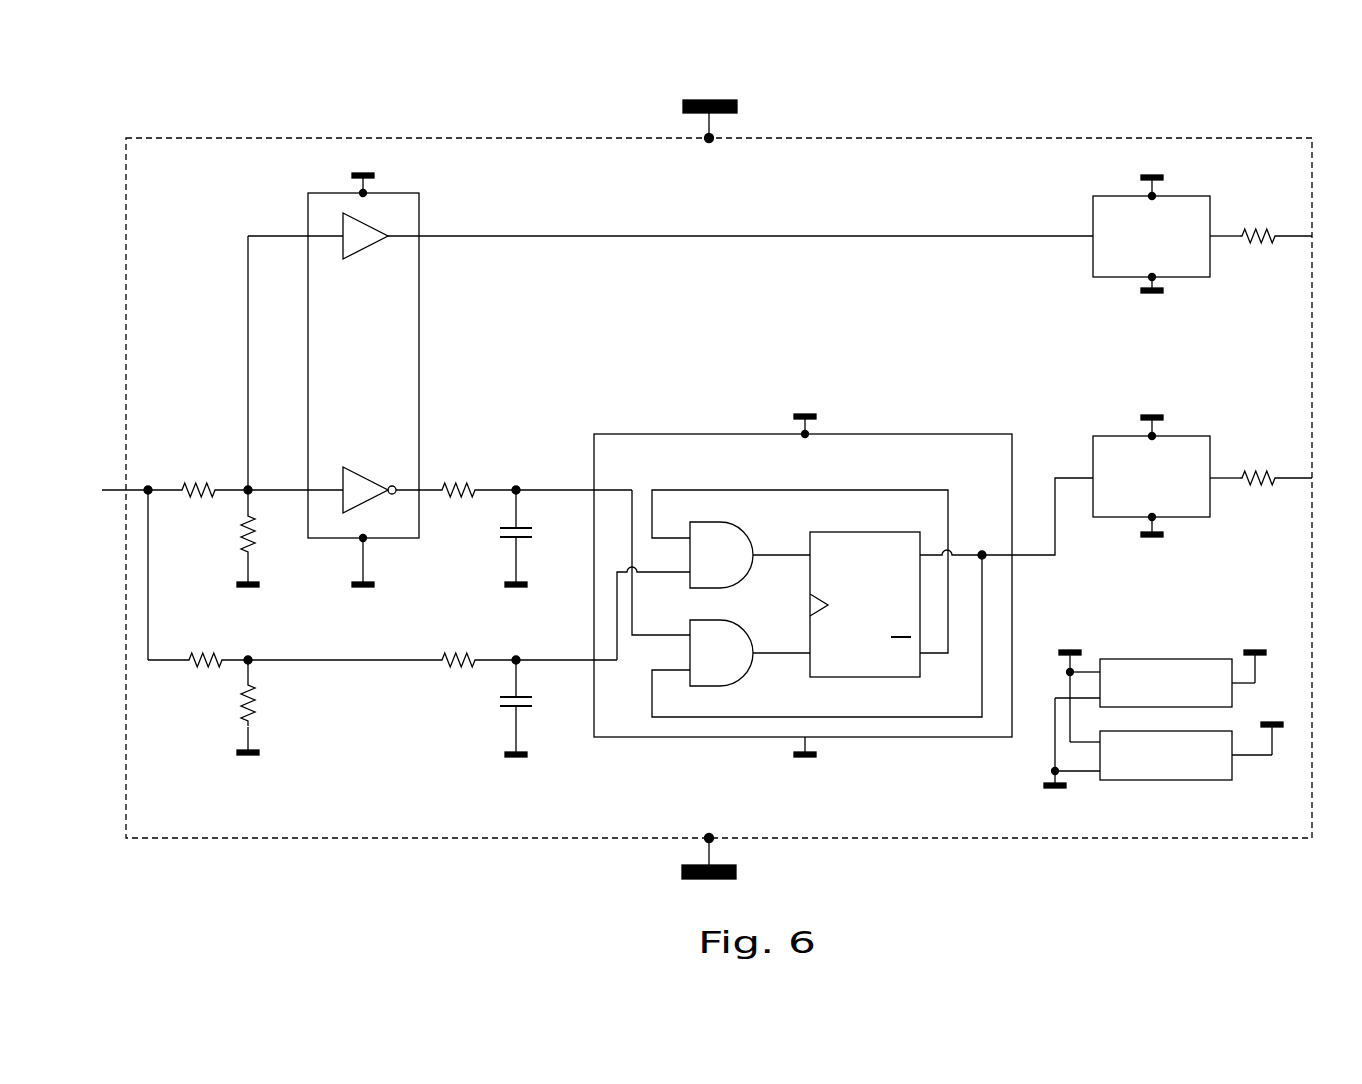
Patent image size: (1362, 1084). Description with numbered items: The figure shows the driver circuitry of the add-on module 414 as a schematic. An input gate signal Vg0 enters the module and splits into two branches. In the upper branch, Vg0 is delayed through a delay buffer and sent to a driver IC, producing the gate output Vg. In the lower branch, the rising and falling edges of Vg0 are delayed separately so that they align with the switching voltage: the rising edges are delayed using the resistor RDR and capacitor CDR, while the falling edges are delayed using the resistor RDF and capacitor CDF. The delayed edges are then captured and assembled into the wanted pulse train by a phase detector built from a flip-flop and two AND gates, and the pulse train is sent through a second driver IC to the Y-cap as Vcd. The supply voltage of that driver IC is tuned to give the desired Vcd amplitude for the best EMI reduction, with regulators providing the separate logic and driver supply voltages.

The add-on module 414 is at (1313, 130).
The falling-edge delay resistor RDF is at (458, 509).
The falling-edge delay capacitor CDF is at (536, 549).
The rising-edge delay resistor RDR is at (459, 679).
The rising-edge delay capacitor CDR is at (537, 719).
The input gate signal Vg0 is at (129, 474).
The gate drive output Vg is at (1277, 241).
The Y-cap drive voltage Vcd is at (1281, 482).